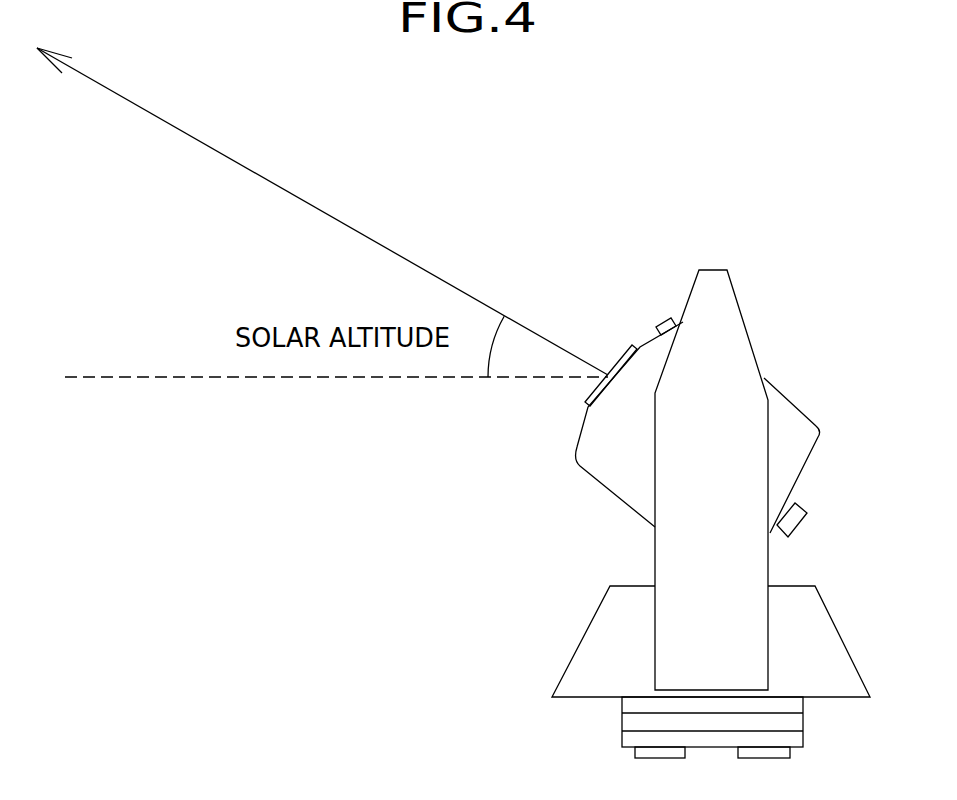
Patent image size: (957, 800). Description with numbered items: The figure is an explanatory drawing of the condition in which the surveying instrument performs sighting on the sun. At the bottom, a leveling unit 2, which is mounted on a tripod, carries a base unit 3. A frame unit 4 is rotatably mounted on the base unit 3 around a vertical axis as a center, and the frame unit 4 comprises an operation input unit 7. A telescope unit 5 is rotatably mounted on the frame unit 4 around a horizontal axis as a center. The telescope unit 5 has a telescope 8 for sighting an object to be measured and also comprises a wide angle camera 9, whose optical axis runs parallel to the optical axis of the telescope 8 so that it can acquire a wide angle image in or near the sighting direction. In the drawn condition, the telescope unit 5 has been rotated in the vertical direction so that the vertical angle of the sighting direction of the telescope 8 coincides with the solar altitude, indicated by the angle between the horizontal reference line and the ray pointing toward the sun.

The leveling unit 2 is at (622, 738).
The base unit 3 is at (805, 705).
The frame unit 4 is at (747, 323).
The telescope unit 5 is at (798, 403).
The operation input unit 7 is at (583, 640).
The telescope 8 is at (618, 360).
The wide angle camera 9 is at (660, 320).